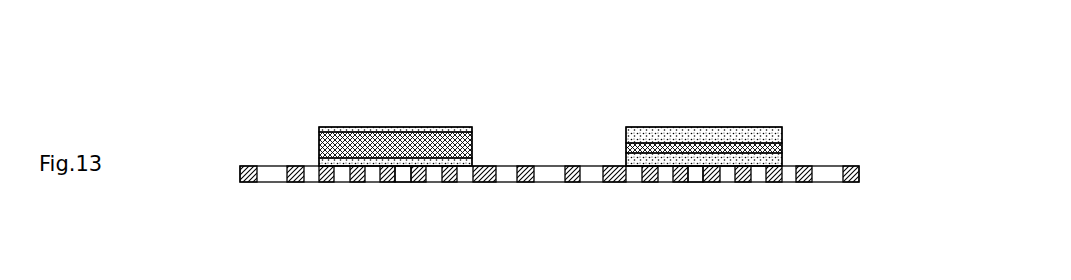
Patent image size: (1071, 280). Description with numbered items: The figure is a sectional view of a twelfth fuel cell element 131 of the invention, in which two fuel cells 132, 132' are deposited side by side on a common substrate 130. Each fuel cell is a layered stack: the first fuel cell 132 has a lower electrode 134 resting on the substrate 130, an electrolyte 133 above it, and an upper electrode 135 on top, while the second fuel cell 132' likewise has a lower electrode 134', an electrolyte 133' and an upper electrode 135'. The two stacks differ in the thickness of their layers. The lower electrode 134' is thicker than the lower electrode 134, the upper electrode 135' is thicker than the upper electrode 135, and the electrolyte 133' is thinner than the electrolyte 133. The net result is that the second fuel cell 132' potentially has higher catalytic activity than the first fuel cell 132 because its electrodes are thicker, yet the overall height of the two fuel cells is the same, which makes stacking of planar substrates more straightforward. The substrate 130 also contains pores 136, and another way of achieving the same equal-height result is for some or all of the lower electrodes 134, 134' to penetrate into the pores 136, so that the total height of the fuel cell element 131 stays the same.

The substrate 130 is at (240, 182).
The fuel cell element 131 is at (863, 190).
The fuel cell 132 is at (395, 107).
The fuel cell 132' is at (704, 109).
The electrolyte 133 is at (337, 140).
The electrolyte 133' is at (761, 135).
The lower electrode 134 is at (337, 158).
The lower electrode 134' is at (762, 158).
The upper electrode 135 is at (347, 108).
The upper electrode 135' is at (751, 112).
The pores 136 is at (402, 173).